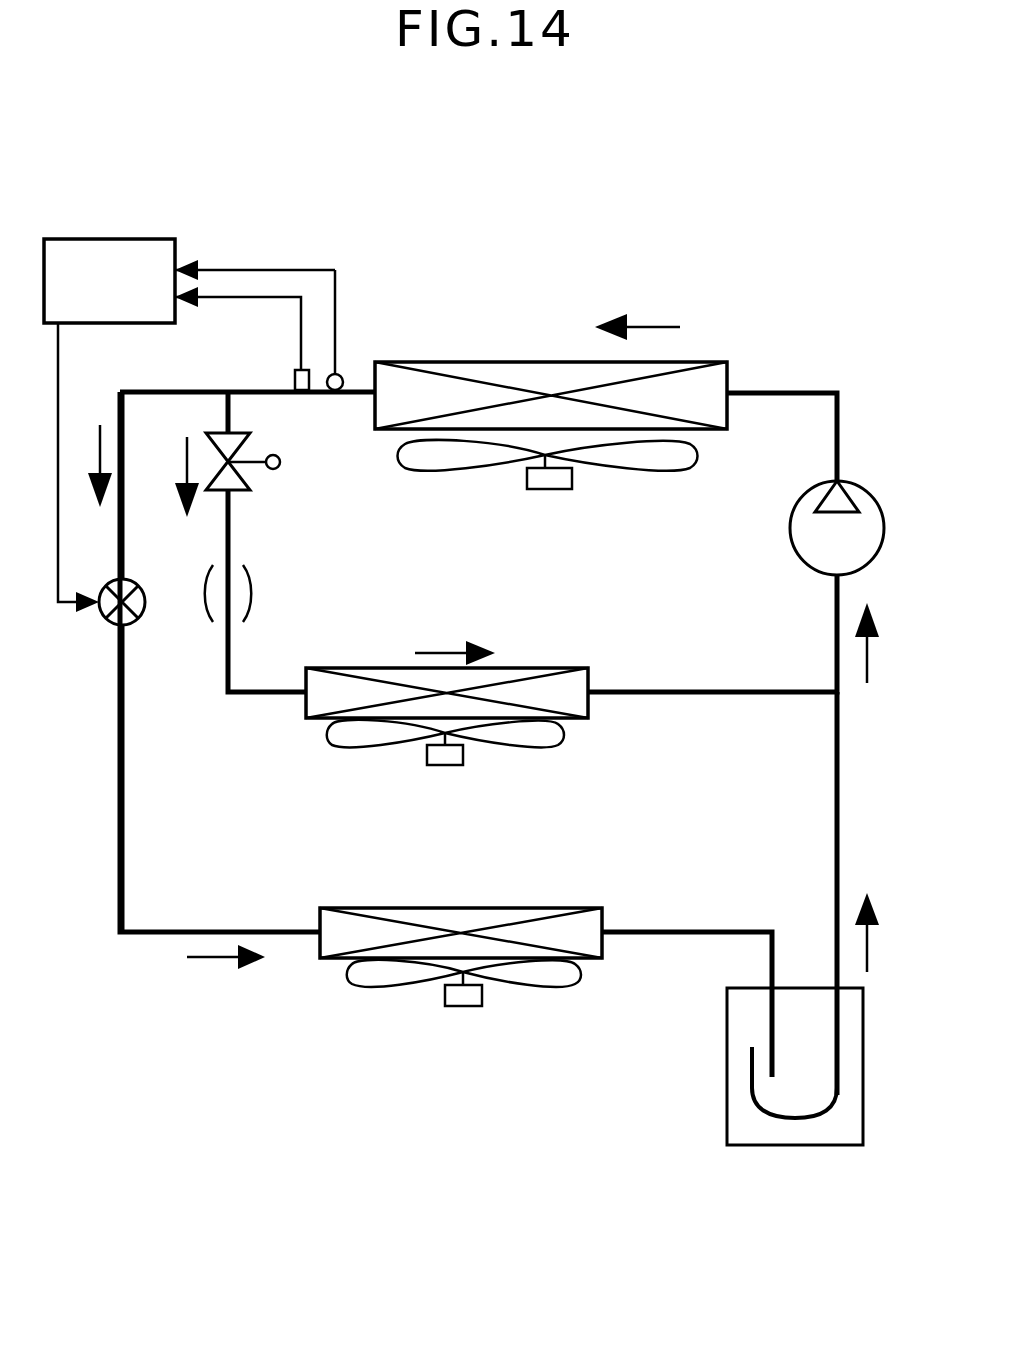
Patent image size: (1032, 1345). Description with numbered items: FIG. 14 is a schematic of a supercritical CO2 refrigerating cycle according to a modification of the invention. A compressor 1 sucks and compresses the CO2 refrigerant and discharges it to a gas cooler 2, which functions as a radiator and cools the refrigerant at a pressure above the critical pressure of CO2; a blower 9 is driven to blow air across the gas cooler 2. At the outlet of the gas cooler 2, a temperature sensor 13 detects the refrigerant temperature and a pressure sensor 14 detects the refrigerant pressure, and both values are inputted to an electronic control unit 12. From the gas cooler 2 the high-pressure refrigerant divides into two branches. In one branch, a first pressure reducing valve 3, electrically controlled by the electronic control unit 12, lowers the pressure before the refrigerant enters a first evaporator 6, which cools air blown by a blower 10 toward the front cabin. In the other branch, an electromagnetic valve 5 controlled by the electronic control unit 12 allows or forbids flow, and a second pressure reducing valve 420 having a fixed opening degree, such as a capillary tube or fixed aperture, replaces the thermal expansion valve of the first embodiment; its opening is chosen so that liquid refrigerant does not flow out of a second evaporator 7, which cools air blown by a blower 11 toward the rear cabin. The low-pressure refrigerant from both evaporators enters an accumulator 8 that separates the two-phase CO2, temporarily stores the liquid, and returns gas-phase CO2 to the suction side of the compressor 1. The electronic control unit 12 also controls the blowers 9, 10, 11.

The compressor 1 is at (868, 538).
The gas cooler 2 is at (511, 372).
The first pressure reducing valve 3 is at (138, 620).
The electromagnetic valve 5 is at (250, 486).
The first evaporator 6 is at (332, 945).
The second evaporator 7 is at (570, 707).
The accumulator 8 is at (812, 1124).
The blower 9 is at (572, 478).
The blower 10 is at (482, 1000).
The blower 11 is at (428, 760).
The electronic control unit 12 is at (108, 238).
The temperature sensor 13 is at (343, 376).
The pressure sensor 14 is at (298, 378).
The second pressure reducing valve 420 is at (244, 600).